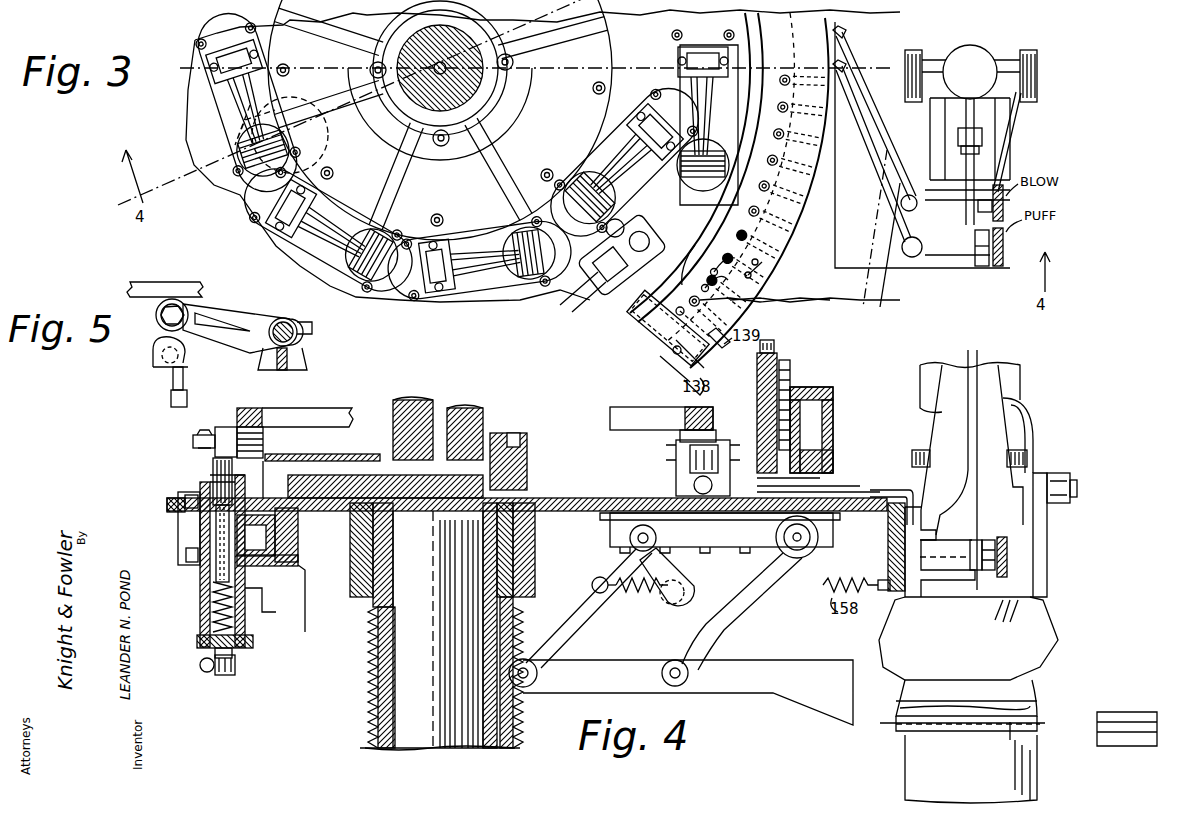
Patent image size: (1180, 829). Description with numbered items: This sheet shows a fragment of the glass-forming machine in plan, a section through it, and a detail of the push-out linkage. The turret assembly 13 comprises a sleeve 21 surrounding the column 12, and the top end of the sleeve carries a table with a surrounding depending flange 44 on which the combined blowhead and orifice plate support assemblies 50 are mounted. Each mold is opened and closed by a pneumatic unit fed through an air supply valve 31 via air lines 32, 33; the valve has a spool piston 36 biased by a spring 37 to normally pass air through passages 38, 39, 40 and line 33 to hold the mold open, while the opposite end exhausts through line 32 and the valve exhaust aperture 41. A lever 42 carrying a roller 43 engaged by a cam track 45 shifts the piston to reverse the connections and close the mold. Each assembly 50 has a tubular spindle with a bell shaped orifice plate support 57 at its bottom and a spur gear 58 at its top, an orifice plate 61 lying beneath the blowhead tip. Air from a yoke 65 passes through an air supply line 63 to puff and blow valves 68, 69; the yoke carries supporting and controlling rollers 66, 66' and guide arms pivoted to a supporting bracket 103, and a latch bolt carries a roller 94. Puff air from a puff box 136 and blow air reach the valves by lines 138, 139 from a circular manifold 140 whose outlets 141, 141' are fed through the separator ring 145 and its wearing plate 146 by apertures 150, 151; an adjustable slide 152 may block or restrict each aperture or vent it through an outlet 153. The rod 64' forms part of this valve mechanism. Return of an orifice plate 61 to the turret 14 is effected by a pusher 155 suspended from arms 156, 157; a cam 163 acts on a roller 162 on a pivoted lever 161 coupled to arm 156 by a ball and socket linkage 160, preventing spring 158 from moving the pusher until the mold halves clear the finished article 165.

In FIG. 3, the column 12 is at (388, 62).
In FIG. 4, the column 12 is at (415, 646).
In FIG. 4, the turret assembly 13 is at (358, 731).
In FIG. 4, the turret 14 is at (1148, 752).
In FIG. 4, the sleeve 21 is at (366, 702).
In FIG. 4, the air supply valve 31 is at (200, 583).
In FIG. 4, the air line 32 is at (266, 608).
In FIG. 4, the air line 33 is at (303, 626).
In FIG. 4, the spool piston 36 is at (180, 536).
In FIG. 4, the spring 37 is at (212, 604).
In FIG. 4, the passage 38 is at (438, 420).
In FIG. 4, the passage 39 is at (318, 468).
In FIG. 4, the passage 40 is at (270, 464).
In FIG. 4, the valve exhaust aperture 41 is at (229, 669).
In FIG. 3, the lever 42 is at (300, 250).
In FIG. 4, the lever 42 is at (224, 440).
In FIG. 3, the roller 43 is at (380, 228).
In FIG. 4, the roller 43 is at (268, 426).
In FIG. 4, the flange 44 is at (886, 553).
In FIG. 4, the cam track 45 is at (326, 414).
In FIG. 4, the combined blowhead and orifice plate support assembly 50 is at (1053, 620).
In FIG. 4, the orifice plate support 57 is at (1015, 694).
In FIG. 4, the spur gear 58 is at (891, 498).
In FIG. 4, the orifice plate 61 is at (1036, 724).
In FIG. 3, the air supply line 63 is at (975, 158).
In FIG. 4, the air supply line 63 is at (968, 415).
In FIG. 3, the link 64' is at (1009, 142).
In FIG. 3, the yoke 65 is at (972, 56).
In FIG. 3, the supporting and controlling roller 66 is at (962, 62).
In FIG. 3, the supporting and controlling roller 66' is at (1035, 62).
In FIG. 3, the puff valve 68 is at (1004, 248).
In FIG. 4, the puff valve 68 is at (1007, 545).
In FIG. 3, the blow valve 69 is at (1006, 200).
In FIG. 4, the roller 94 is at (1055, 473).
In FIG. 4, the supporting bracket 103 is at (970, 392).
In FIG. 4, the puff box 136 is at (834, 404).
In FIG. 3, the puff air line 138 is at (868, 150).
In FIG. 4, the puff air line 138 is at (842, 486).
In FIG. 3, the blow air line 139 is at (860, 42).
In FIG. 3, the circular manifold 140 is at (660, 336).
In FIG. 4, the circular manifold 140 is at (713, 468).
In FIG. 3, the outlet 141 is at (664, 361).
In FIG. 3, the outlet 141' is at (644, 322).
In FIG. 3, the separator ring 145 is at (786, 228).
In FIG. 4, the separator ring 145 is at (836, 450).
In FIG. 3, the wearing plate 146 is at (752, 302).
In FIG. 4, the wearing plate 146 is at (842, 466).
In FIG. 3, the aperture 150 is at (768, 278).
In FIG. 3, the aperture 151 is at (708, 262).
In FIG. 4, the adjustable slide 152 is at (780, 372).
In FIG. 4, the outlet 153 is at (756, 420).
In FIG. 4, the pusher 155 is at (732, 670).
In FIG. 4, the arm 156 is at (588, 618).
In FIG. 4, the arm 157 is at (728, 618).
In FIG. 4, the spring 158 is at (650, 588).
In FIG. 5, the ball and socket linkage 160 is at (171, 400).
In FIG. 4, the ball and socket linkage 160 is at (692, 552).
In FIG. 3, the pivoted lever 161 is at (590, 296).
In FIG. 5, the pivoted lever 161 is at (245, 320).
In FIG. 3, the roller 162 is at (622, 228).
In FIG. 5, the roller 162 is at (153, 330).
In FIG. 5, the cam 163 is at (162, 290).
In FIG. 4, the cam 163 is at (655, 425).
In FIG. 4, the article 165 is at (925, 786).